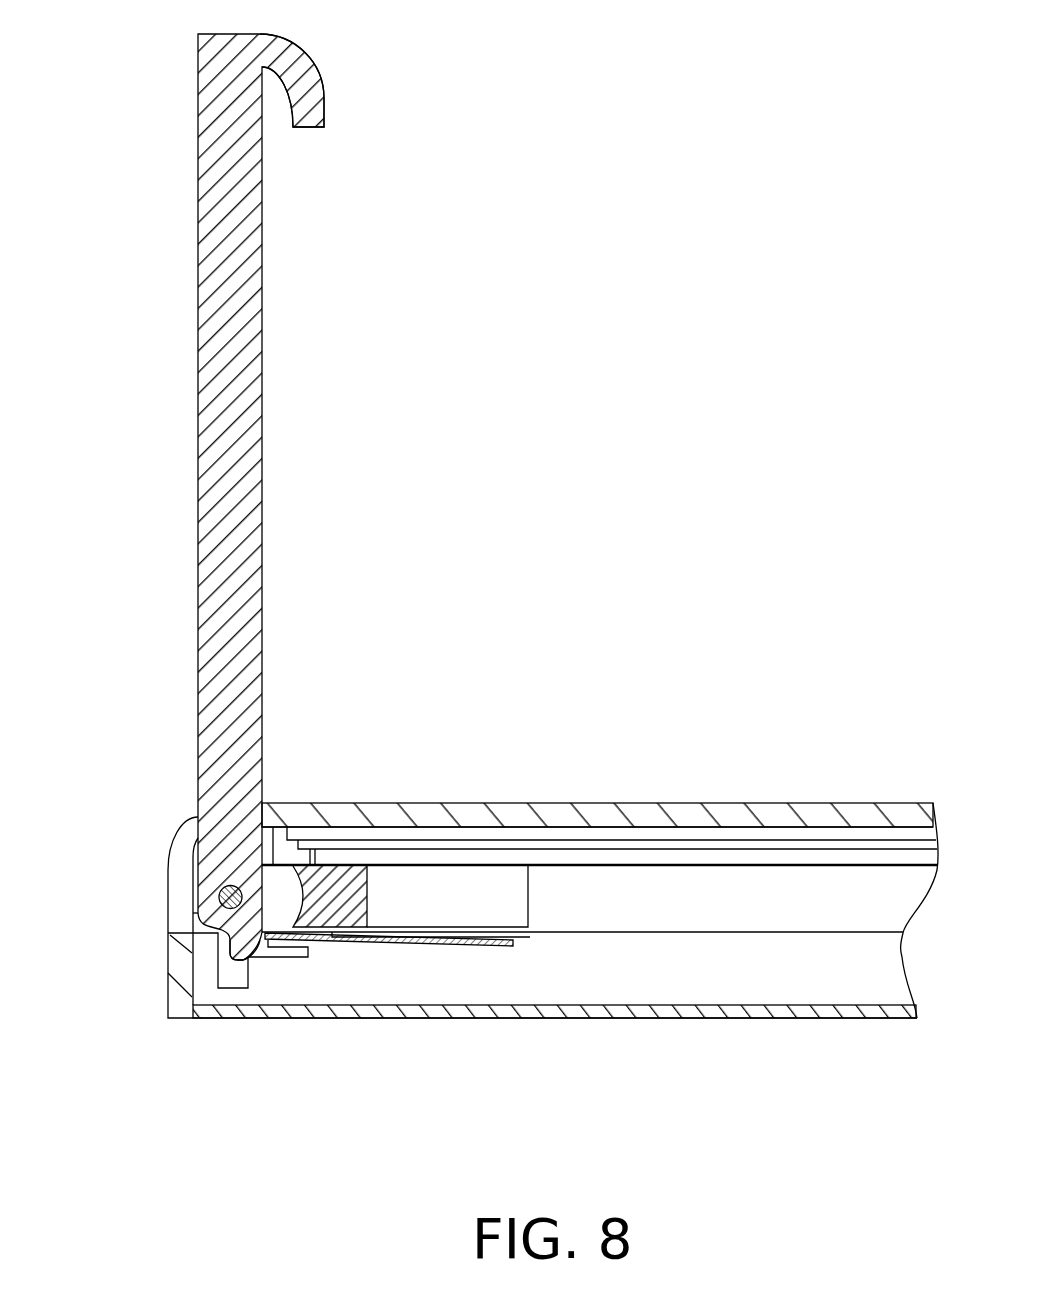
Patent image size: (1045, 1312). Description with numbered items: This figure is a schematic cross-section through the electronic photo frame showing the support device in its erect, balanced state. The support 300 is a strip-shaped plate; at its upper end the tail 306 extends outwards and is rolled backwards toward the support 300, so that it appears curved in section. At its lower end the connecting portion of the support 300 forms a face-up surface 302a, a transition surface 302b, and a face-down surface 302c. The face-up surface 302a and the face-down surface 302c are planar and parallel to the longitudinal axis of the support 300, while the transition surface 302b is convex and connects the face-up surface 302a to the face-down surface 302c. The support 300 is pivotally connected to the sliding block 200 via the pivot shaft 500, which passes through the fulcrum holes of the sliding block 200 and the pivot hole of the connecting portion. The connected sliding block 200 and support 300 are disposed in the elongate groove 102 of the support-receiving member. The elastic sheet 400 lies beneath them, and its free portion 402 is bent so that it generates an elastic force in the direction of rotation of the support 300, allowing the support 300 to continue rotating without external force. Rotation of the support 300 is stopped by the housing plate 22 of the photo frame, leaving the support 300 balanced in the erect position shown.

The bottom housing plate 22 is at (687, 817).
The elongate groove 102 is at (597, 900).
The sliding block 200 is at (342, 890).
The support 300 is at (243, 548).
The face-up surface 302a is at (212, 945).
The transition surface 302b is at (231, 973).
The face-down surface 302c is at (266, 942).
The tail 306 is at (305, 88).
The elastic sheet 400 is at (435, 945).
The free portion 402 is at (265, 950).
The pivot shaft 500 is at (226, 893).